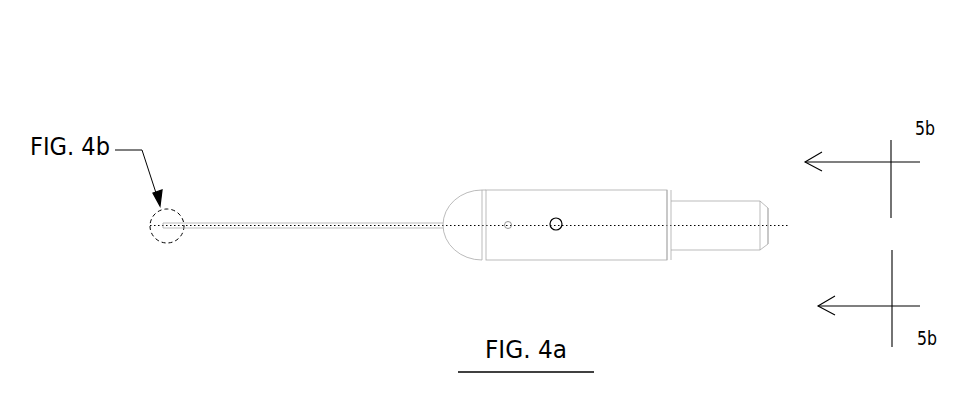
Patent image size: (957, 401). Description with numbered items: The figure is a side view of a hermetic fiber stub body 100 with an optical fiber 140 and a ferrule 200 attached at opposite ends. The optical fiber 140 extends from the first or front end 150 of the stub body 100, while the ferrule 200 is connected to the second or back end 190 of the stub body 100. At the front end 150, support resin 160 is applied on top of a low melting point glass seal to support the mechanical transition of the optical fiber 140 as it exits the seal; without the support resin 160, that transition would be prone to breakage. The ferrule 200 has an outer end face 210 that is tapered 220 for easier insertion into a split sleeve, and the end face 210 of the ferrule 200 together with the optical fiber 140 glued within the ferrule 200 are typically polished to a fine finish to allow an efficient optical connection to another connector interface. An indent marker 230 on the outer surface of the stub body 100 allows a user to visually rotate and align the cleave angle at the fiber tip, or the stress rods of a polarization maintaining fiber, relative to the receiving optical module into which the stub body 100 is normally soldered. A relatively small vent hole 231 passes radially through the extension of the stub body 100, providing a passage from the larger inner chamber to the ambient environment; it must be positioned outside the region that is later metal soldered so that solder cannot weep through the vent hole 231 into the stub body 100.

The hermetic fiber stub body 100 is at (510, 241).
The optical fiber 140 is at (318, 223).
The front end 150 is at (469, 192).
The support resin 160 is at (462, 238).
The back end 190 is at (669, 255).
The ferrule 200 is at (696, 210).
The end face 210 is at (769, 205).
The taper 220 is at (768, 252).
The indent marker 230 is at (509, 221).
The vent hole 231 is at (559, 218).